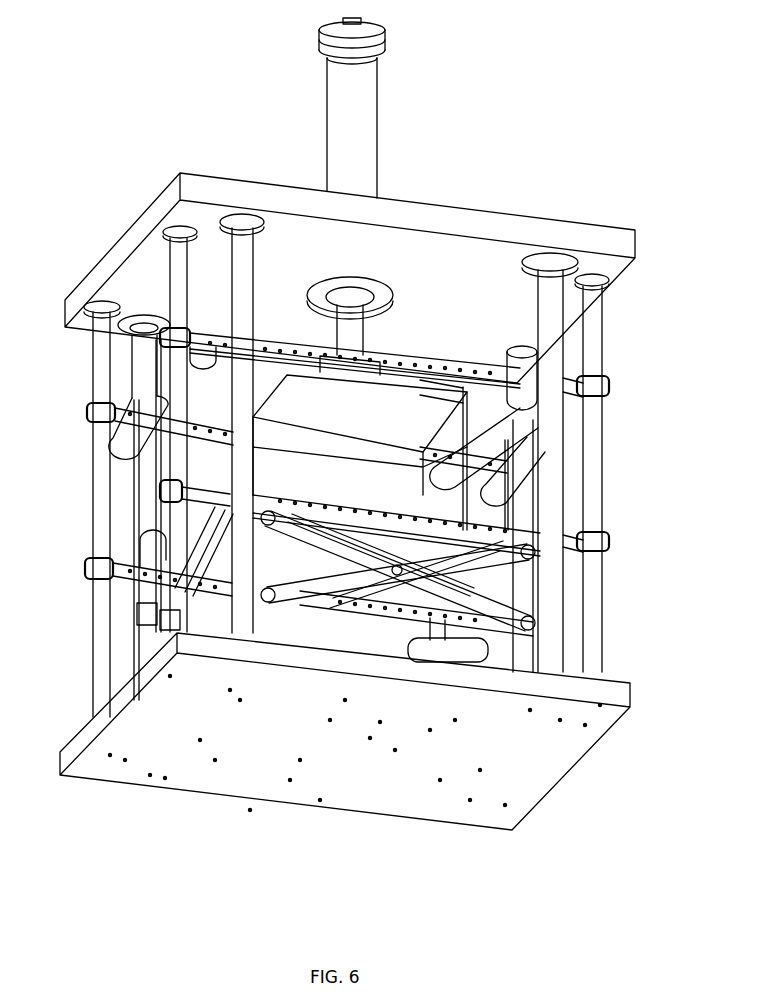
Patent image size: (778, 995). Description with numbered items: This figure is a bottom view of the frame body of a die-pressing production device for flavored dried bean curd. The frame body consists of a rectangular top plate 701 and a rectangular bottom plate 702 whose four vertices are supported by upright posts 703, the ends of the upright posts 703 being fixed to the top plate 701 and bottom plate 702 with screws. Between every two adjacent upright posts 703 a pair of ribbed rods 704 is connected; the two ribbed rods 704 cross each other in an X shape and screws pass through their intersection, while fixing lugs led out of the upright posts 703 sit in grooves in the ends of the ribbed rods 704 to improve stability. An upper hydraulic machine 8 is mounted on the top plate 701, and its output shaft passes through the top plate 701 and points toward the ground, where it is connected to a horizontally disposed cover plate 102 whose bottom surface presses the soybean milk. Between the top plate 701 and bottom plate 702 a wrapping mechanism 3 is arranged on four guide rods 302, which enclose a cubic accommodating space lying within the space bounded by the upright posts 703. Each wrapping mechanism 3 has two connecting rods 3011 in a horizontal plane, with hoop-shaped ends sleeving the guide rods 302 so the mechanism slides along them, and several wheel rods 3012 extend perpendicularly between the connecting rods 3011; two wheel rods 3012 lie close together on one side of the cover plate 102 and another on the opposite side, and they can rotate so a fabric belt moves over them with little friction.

The upper hydraulic machine 8 is at (343, 143).
The top plate 701 is at (440, 267).
The bottom plate 702 is at (342, 773).
The upright post 703 is at (145, 353).
The ribbed rod 704 is at (323, 560).
The cover plate 102 is at (350, 433).
The wrapping mechanism 3 is at (670, 425).
The guide rod 302 is at (590, 417).
The wheel rod 3012 is at (533, 442).
The connecting rod 3011 is at (536, 480).